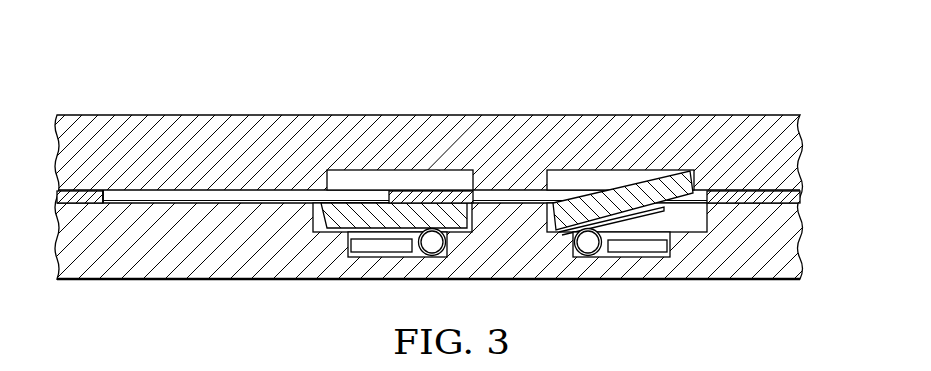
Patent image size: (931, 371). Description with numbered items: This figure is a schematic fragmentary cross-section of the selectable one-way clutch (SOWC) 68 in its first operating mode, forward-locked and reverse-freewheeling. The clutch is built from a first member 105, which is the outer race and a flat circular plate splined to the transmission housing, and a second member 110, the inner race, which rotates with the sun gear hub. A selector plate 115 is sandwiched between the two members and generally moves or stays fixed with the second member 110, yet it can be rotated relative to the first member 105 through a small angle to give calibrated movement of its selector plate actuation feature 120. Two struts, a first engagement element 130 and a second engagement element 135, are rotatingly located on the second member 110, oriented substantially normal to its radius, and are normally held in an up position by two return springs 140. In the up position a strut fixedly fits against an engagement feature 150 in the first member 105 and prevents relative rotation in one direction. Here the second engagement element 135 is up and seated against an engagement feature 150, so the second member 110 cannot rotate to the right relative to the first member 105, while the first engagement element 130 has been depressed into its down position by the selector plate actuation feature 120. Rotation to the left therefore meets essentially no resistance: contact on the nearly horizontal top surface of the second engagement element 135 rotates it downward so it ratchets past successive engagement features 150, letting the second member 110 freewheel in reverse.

The selectable one-way clutch 68 is at (223, 62).
The first member 105 is at (800, 155).
The second member 110 is at (800, 240).
The selector plate 115 is at (82, 196).
The selector plate actuation feature 120 is at (433, 195).
The first engagement element 130 is at (390, 192).
The second engagement element 135 is at (628, 188).
The return spring 140 is at (422, 266).
The engagement feature 150 is at (379, 203).